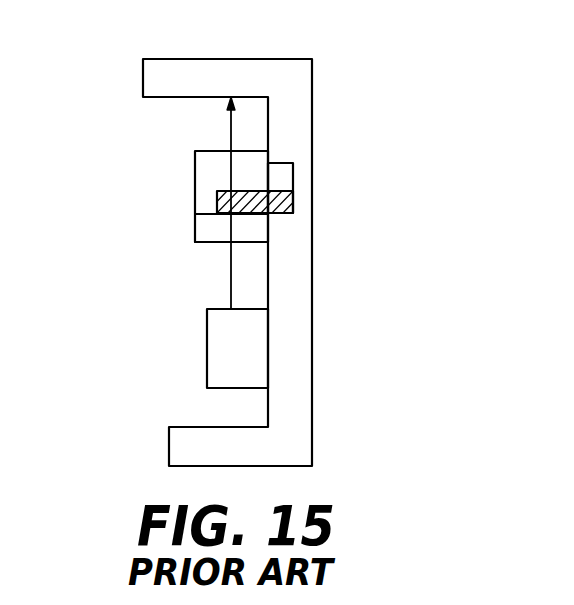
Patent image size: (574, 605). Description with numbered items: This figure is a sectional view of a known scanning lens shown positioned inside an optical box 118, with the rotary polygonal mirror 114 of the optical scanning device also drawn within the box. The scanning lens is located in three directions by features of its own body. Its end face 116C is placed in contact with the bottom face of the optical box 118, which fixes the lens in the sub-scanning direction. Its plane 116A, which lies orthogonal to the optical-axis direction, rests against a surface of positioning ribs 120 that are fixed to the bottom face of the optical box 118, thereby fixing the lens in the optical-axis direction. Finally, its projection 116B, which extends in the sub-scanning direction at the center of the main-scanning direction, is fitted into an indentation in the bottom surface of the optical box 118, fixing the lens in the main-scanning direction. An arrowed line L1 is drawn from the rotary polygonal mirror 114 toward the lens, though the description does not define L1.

The optical box 118 is at (259, 66).
The plane 116A is at (217, 215).
The projection 116B is at (282, 170).
The end face 116C is at (270, 229).
The positioning ribs 120 is at (277, 203).
The magnetic flux line L1 is at (228, 273).
The rotary polygonal mirror 114 is at (223, 358).